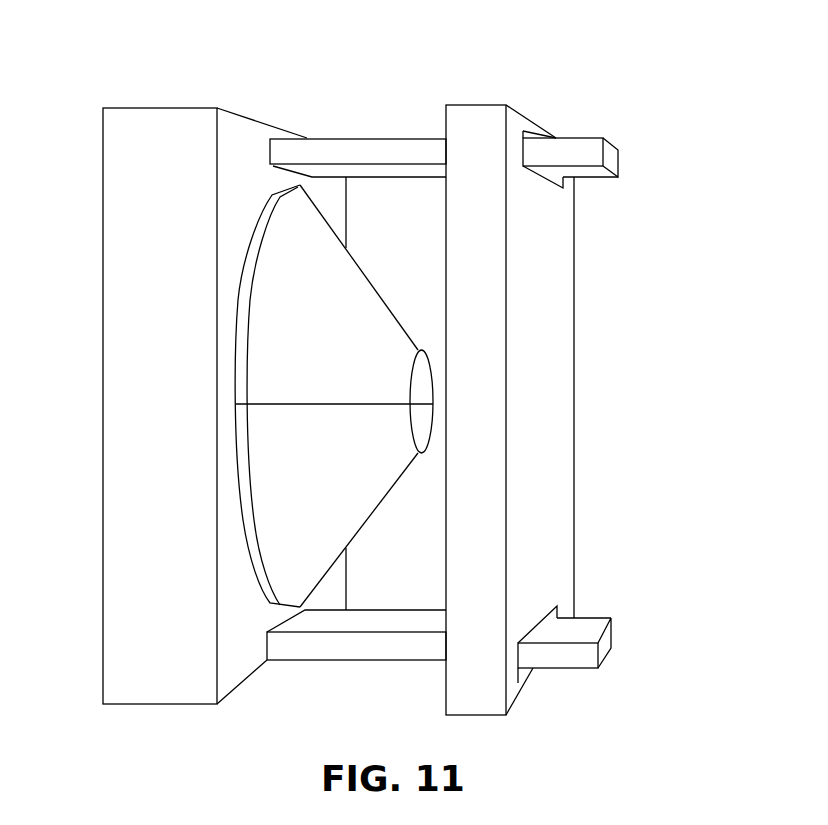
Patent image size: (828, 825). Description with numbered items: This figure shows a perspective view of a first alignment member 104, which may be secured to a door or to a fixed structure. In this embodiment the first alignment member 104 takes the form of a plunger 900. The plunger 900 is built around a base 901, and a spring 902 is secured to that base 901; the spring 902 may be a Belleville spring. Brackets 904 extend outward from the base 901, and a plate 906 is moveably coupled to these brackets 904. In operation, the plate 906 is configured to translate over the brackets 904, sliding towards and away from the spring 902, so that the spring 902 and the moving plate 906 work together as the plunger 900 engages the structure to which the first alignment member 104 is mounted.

The first alignment member 104 is at (145, 50).
The plunger 900 is at (137, 633).
The base 901 is at (258, 118).
The spring 902 is at (363, 324).
The brackets 904 is at (581, 138).
The plate 906 is at (540, 372).